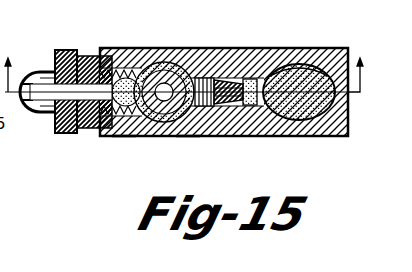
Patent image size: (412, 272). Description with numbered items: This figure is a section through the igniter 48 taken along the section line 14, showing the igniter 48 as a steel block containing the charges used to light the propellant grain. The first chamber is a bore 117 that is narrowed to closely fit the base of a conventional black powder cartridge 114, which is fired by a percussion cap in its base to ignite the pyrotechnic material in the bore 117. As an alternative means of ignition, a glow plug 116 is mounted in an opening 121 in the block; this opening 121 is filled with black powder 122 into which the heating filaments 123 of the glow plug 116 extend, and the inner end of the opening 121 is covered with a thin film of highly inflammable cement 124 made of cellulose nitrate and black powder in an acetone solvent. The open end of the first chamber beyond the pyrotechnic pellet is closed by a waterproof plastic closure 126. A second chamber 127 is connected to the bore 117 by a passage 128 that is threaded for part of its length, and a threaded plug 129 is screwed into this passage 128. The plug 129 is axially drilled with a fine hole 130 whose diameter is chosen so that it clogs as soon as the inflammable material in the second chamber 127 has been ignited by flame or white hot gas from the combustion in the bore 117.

The section line 14 is at (184, 66).
The igniter 48 is at (287, 136).
The black powder cartridge 114 is at (163, 64).
The glow plug 116 is at (58, 56).
The bore 117 is at (186, 134).
The opening 121 is at (124, 133).
The black powder 122 is at (105, 72).
The heating filaments 123 is at (64, 88).
The inflammable cement 124 is at (141, 80).
The waterproof plastic closure 126 is at (248, 110).
The second chamber 127 is at (302, 65).
The passage 128 is at (205, 74).
The threaded plug 129 is at (218, 74).
The fine hole 130 is at (248, 110).